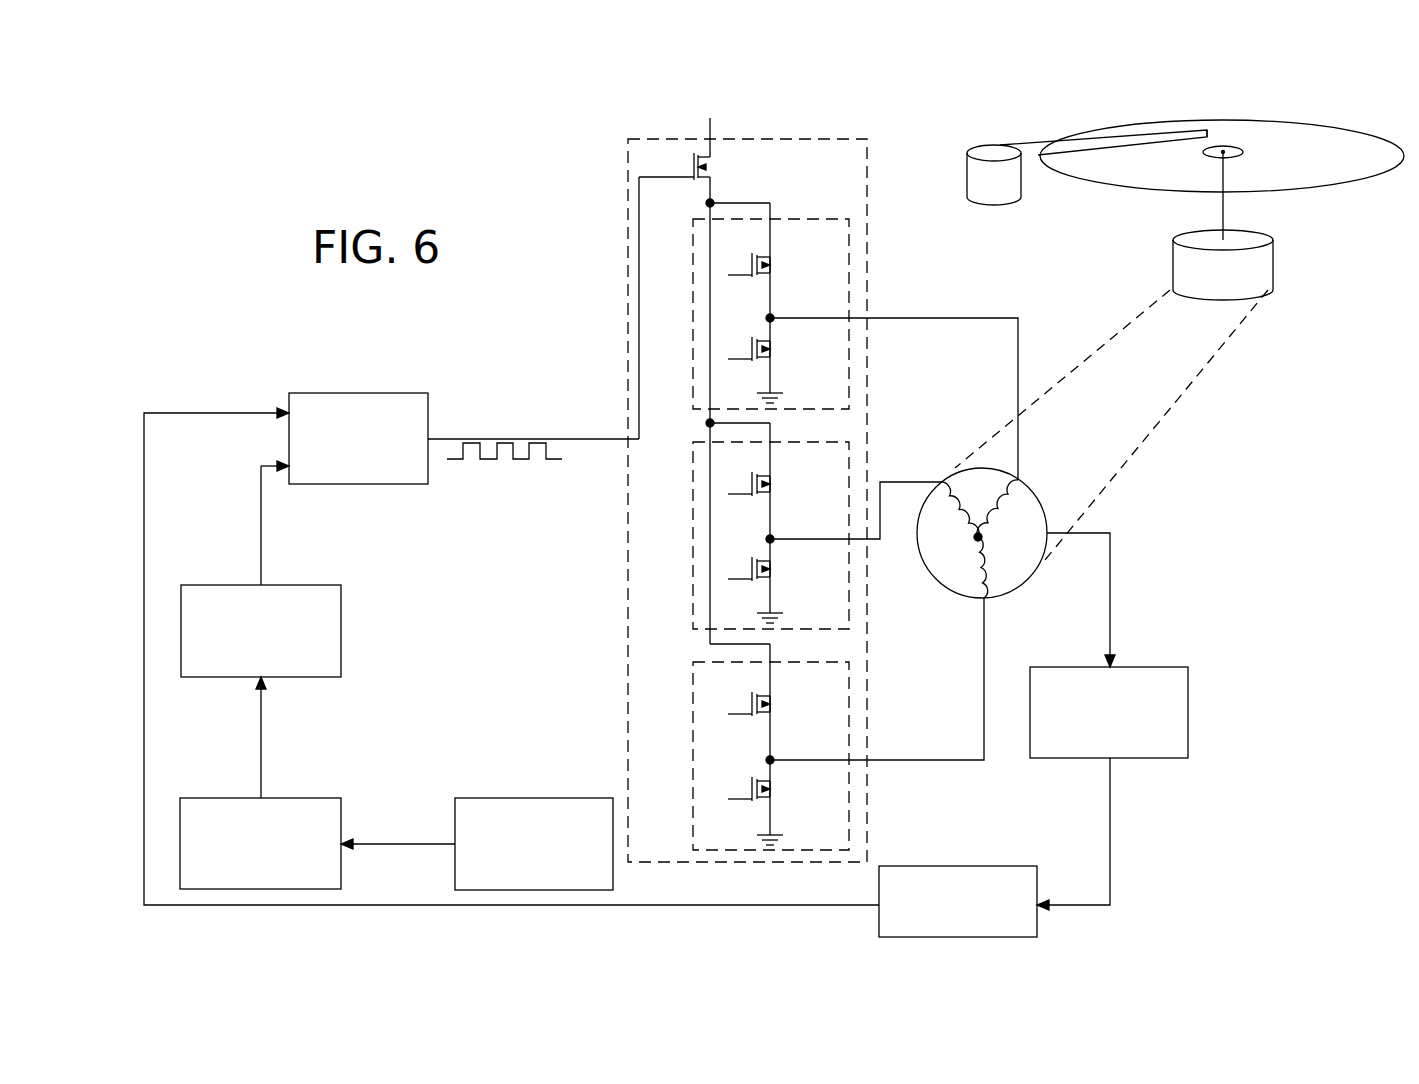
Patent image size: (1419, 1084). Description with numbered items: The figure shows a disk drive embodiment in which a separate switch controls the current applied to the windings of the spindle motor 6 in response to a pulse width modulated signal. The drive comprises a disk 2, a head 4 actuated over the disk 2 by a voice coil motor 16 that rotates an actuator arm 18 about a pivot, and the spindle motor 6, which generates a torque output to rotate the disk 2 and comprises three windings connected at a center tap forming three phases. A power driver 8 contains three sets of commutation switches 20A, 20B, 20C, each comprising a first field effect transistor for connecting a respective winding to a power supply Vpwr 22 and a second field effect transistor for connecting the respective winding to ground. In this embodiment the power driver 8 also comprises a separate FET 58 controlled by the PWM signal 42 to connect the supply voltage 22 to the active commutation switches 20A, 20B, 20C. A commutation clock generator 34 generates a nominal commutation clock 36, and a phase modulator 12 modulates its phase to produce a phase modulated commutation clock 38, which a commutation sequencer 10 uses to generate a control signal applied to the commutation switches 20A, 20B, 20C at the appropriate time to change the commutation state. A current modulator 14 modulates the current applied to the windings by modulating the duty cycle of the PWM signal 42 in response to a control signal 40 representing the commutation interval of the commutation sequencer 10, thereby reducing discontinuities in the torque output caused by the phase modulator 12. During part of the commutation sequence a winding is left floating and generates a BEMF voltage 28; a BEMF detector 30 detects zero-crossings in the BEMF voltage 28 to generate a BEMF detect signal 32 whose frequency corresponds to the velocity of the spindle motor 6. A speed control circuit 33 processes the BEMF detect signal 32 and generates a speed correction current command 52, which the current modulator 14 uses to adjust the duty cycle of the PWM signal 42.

The disk 2 is at (1376, 133).
The head 4 is at (1206, 126).
The spindle motor 6 is at (1010, 597).
The power driver 8 is at (627, 265).
The commutation sequencer 10 is at (203, 584).
The phase modulator 12 is at (208, 797).
The current modulator 14 is at (358, 392).
The voice coil motor 16 is at (985, 139).
The actuator arm 18 is at (1026, 143).
The commutation switch 20A is at (783, 219).
The commutation switch 20B is at (783, 442).
The commutation switch 20C is at (783, 662).
The power supply Vpwr 22 is at (712, 125).
The BEMF voltage 28 is at (1112, 622).
The BEMF detector 30 is at (1190, 710).
The BEMF detect signal 32 is at (1112, 792).
The speed control circuit 33 is at (955, 865).
The commutation clock generator 34 is at (533, 797).
The nominal commutation clock 36 is at (398, 847).
The phase modulated commutation clock 38 is at (264, 763).
The control signal 40 is at (263, 532).
The PWM signal 42 is at (487, 438).
The speed correction current command 52 is at (740, 903).
The FET 58 is at (682, 149).